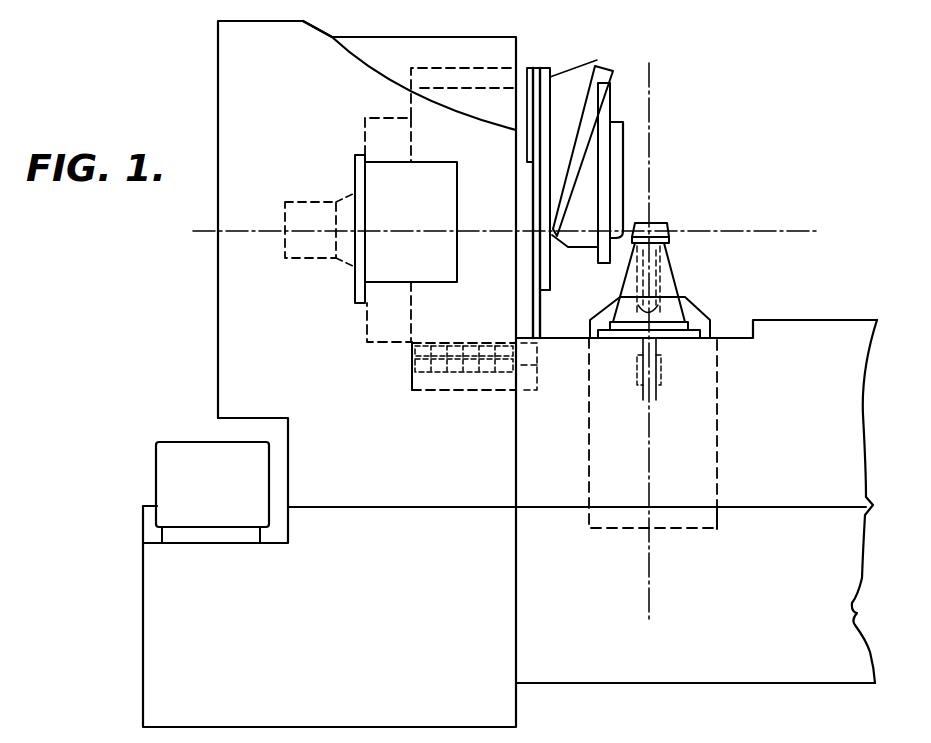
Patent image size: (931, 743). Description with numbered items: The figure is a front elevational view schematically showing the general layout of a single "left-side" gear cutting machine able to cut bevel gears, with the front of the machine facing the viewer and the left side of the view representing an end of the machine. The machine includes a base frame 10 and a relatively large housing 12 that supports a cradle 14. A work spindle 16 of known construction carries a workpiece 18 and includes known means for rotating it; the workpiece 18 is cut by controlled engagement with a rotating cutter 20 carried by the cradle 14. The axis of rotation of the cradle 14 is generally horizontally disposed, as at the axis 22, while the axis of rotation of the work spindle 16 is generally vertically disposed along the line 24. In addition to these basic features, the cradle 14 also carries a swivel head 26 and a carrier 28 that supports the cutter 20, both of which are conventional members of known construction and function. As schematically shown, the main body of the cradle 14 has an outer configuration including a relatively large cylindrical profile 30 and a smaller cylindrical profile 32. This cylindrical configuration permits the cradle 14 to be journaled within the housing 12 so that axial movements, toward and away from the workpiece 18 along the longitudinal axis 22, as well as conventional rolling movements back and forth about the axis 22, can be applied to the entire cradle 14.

The base frame 10 is at (388, 616).
The housing 12 is at (358, 483).
The cradle 14 is at (527, 58).
The work spindle 16 is at (663, 288).
The workpiece 18 is at (663, 230).
The rotating cutter 20 is at (615, 118).
The axis of rotation of the cradle 22 is at (237, 232).
The axis of rotation of the work spindle 24 is at (649, 603).
The swivel head 26 is at (590, 75).
The carrier 28 is at (576, 234).
The large cylindrical profile 30 is at (430, 392).
The smaller cylindrical profile 32 is at (377, 342).